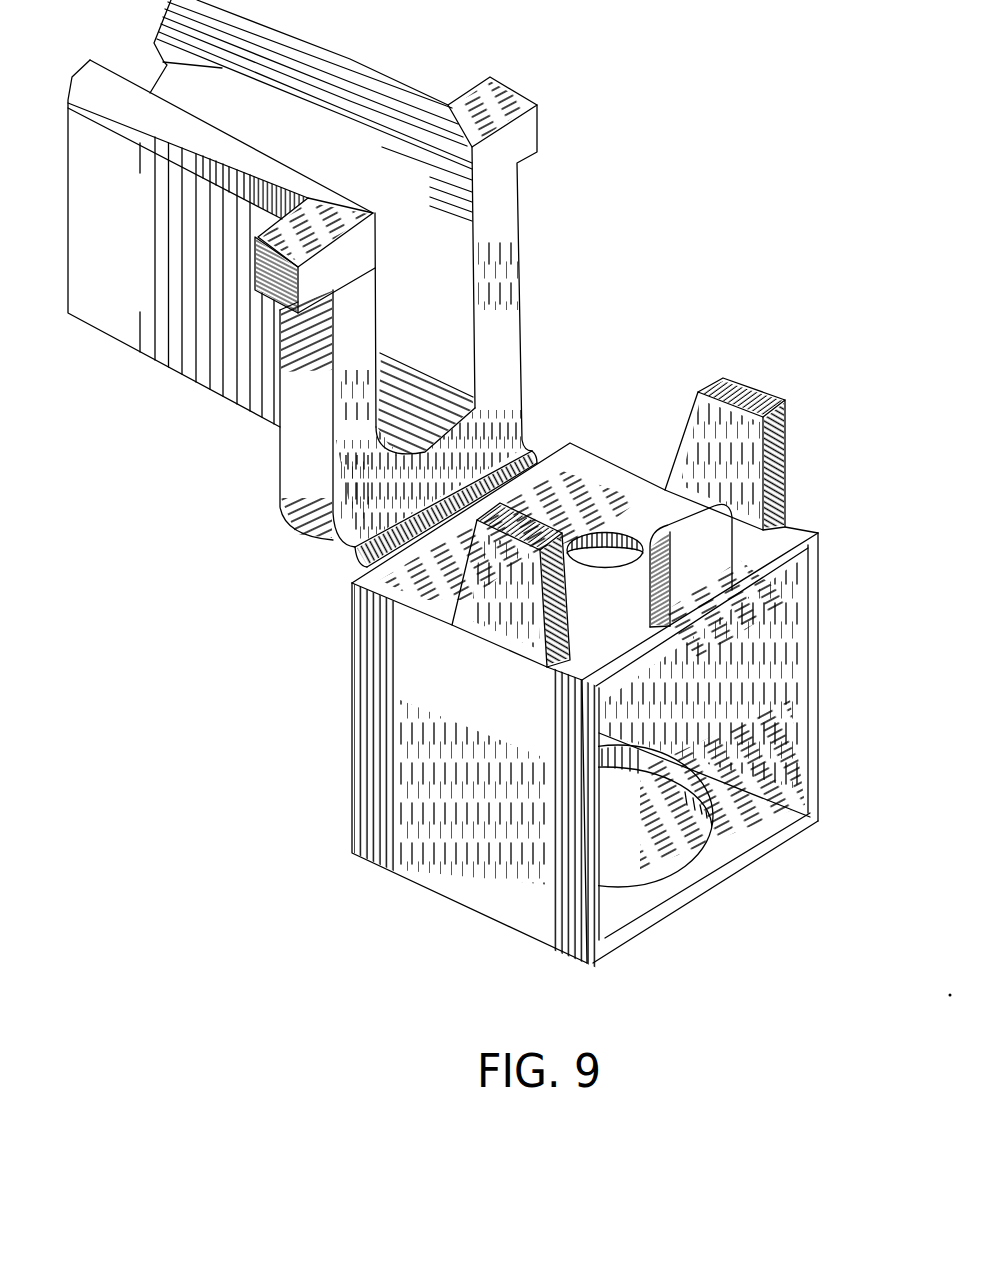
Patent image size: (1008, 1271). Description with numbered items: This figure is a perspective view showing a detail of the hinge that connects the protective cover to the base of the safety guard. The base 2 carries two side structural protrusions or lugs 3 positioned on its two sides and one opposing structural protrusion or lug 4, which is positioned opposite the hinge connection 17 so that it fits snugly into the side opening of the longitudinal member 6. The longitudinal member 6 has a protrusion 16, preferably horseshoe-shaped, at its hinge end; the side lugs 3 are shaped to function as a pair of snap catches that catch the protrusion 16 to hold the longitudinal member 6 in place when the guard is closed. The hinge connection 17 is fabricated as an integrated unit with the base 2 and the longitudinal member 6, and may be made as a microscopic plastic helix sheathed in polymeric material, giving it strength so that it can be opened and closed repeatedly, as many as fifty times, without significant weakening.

The base 2 is at (818, 665).
The side structural protrusion or lug 3 is at (503, 607).
The opposing structural protrusion or lug 4 is at (735, 545).
The longitudinal member 6 is at (112, 308).
The protrusion 16 is at (500, 313).
The hinge connection 17 is at (363, 550).